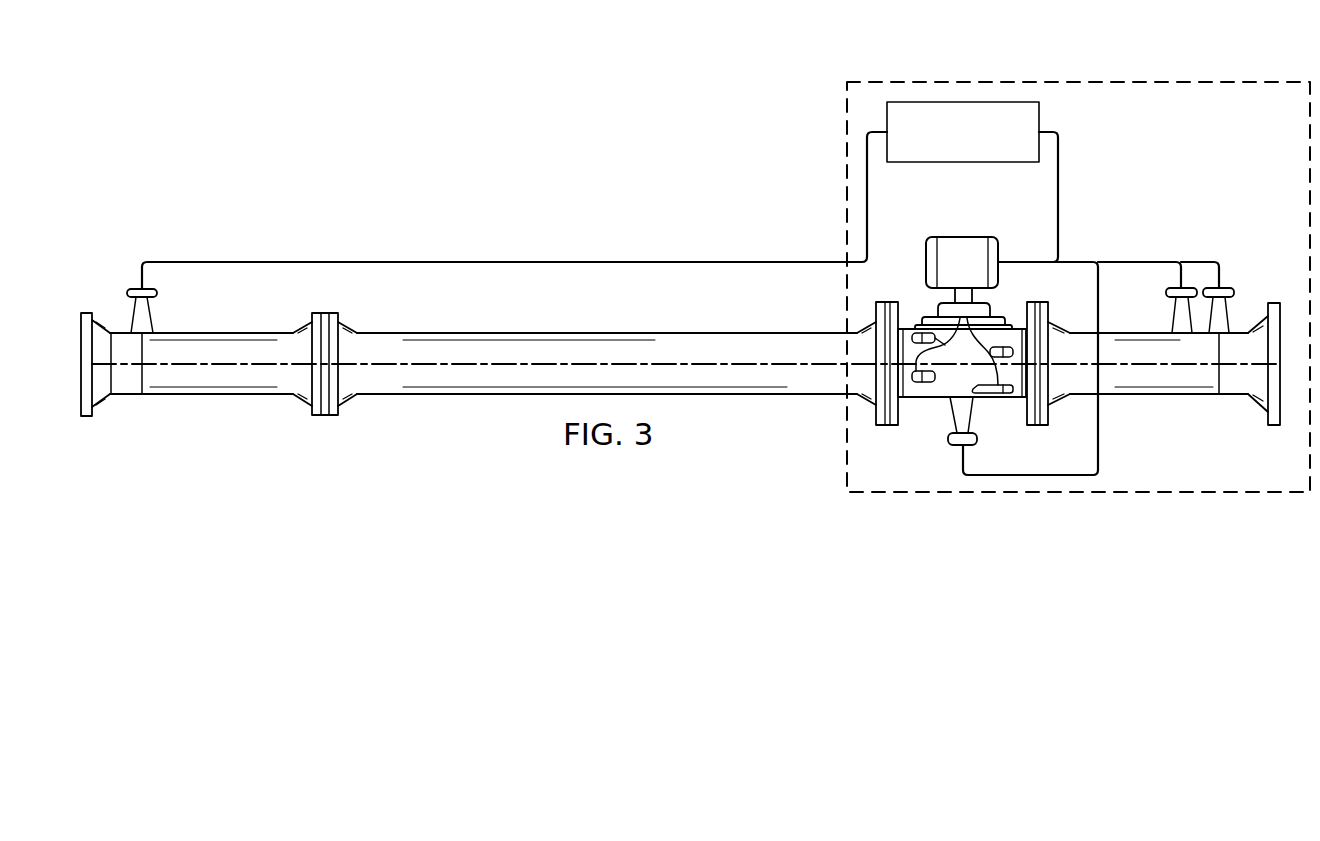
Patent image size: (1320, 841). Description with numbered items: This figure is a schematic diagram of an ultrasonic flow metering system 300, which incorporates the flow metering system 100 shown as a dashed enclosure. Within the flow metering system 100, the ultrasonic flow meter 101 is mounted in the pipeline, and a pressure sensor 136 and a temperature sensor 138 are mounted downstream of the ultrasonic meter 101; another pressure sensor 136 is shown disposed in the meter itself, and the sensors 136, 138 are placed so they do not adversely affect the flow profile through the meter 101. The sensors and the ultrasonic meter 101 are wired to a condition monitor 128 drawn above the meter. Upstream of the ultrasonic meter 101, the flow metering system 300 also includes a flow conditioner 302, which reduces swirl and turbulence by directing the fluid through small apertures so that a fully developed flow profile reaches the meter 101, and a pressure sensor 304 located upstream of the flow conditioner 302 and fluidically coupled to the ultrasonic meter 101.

The ultrasonic flow metering system 300 is at (592, 96).
The flow metering system 100 is at (1206, 81).
The ultrasonic flow meter 101 is at (962, 237).
The condition monitor 128 is at (1041, 114).
The pressure sensor 136 is at (1166, 292).
The temperature sensor 138 is at (1236, 292).
The flow conditioner 302 is at (327, 416).
The pressure sensor 304 is at (127, 293).